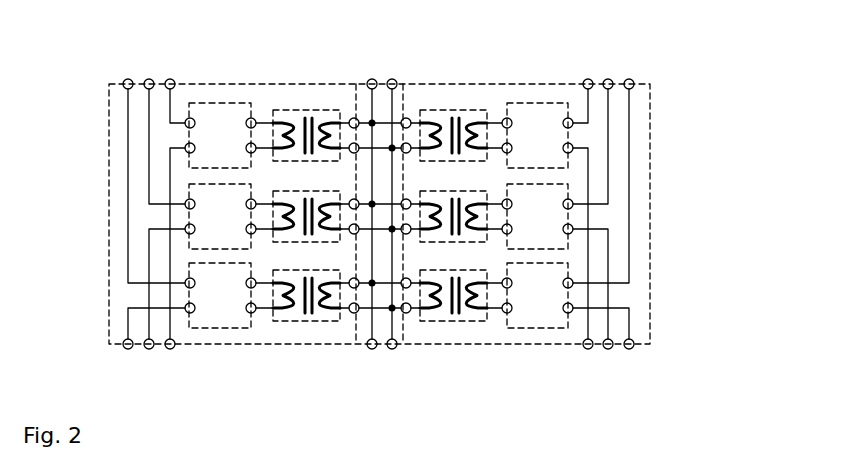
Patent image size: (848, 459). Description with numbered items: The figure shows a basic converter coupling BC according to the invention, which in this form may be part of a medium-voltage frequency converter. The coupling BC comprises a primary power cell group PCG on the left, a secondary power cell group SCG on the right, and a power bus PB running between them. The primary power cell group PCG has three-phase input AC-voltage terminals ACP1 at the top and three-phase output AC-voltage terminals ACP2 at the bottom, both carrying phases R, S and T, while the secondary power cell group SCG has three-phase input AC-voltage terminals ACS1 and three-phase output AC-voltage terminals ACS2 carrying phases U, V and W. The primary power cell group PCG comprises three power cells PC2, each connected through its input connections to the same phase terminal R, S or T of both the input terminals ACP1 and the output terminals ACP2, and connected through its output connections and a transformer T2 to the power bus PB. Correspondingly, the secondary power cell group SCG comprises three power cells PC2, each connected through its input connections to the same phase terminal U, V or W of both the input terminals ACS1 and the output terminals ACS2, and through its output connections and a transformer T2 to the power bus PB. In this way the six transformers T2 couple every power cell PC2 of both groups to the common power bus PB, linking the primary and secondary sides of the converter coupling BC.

The converter coupling BC is at (662, 50).
The primary power cell group PCG is at (105, 216).
The secondary power cell group SCG is at (655, 215).
The three-phase input AC-voltage terminals ACP1 is at (127, 50).
The three-phase output AC-voltage terminals ACP2 is at (127, 376).
The three-phase input AC-voltage terminals ACS1 is at (587, 376).
The three-phase output AC-voltage terminals ACS2 is at (587, 50).
The power cell PC2 is at (223, 98).
The power bus PB is at (404, 354).
The transformer T2 is at (308, 323).